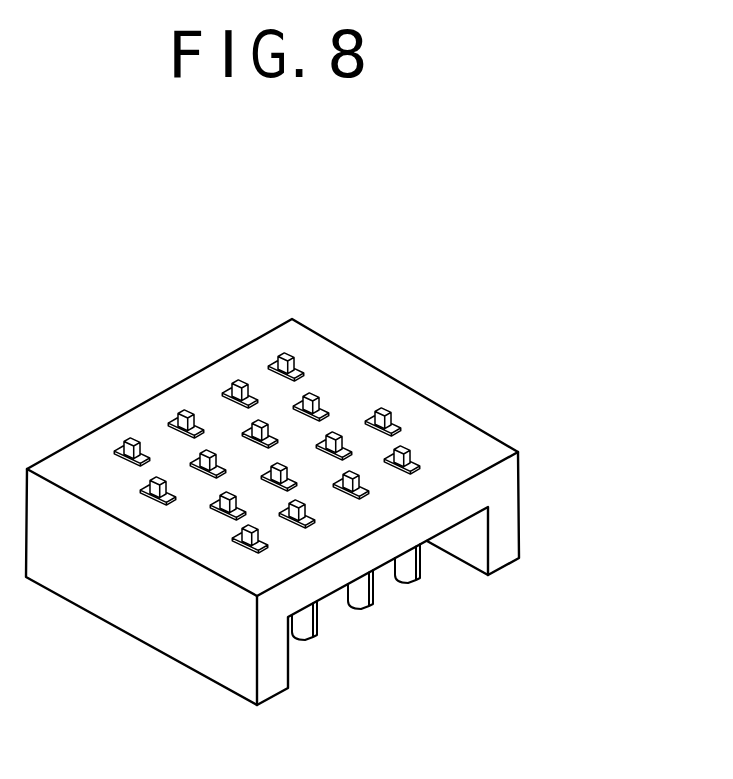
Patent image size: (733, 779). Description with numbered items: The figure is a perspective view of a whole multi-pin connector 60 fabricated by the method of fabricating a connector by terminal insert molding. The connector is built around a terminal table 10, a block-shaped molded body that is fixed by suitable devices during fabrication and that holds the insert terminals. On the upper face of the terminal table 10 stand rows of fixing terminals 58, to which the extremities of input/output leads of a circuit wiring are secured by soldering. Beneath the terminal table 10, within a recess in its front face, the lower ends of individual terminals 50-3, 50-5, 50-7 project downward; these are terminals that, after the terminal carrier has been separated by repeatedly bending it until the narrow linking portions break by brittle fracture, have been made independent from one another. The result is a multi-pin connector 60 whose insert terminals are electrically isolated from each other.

The multi-pin connector 60 is at (318, 516).
The terminal table 10 is at (480, 425).
The fixing terminals 58 is at (285, 355).
The terminal 50-3 is at (302, 636).
The terminal 50-5 is at (358, 610).
The terminal 50-7 is at (404, 583).